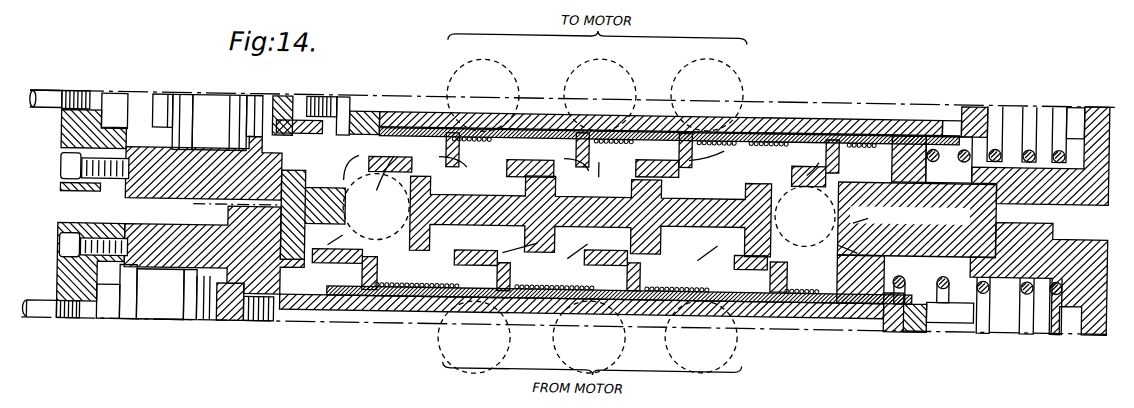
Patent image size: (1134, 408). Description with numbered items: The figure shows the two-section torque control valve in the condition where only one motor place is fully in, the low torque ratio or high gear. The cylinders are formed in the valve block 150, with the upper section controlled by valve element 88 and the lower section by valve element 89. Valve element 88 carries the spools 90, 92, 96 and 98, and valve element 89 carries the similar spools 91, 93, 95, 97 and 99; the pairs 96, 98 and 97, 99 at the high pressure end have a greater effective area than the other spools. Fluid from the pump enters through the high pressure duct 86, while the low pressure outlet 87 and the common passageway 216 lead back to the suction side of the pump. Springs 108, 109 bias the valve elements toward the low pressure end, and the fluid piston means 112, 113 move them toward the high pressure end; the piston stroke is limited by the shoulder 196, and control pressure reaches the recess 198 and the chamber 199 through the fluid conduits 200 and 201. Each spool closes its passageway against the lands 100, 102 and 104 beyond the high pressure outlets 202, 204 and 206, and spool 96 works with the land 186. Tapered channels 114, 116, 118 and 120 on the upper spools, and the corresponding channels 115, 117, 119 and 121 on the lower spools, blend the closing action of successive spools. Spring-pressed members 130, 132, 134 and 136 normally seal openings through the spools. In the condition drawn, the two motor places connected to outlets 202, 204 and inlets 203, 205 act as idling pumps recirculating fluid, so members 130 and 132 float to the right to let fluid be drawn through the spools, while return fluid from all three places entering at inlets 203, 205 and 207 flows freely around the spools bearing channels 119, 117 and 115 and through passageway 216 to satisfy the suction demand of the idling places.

The high pressure duct 86 is at (798, 232).
The low pressure outlet 87 is at (378, 236).
The valve element 88 is at (391, 106).
The valve element 89 is at (392, 307).
The spool 90 is at (406, 124).
The spool 91 is at (345, 288).
The spool 92 is at (536, 125).
The spool 93 is at (470, 266).
The spool 95 is at (612, 270).
The spool 96 is at (813, 128).
The spool 97 is at (770, 292).
The spool 98 is at (908, 130).
The spool 99 is at (870, 250).
The land 100 is at (456, 185).
The land 102 is at (504, 189).
The land 104 is at (619, 185).
The spring 108 is at (1016, 219).
The spring 109 is at (943, 266).
The fluid piston means 112 is at (185, 94).
The fluid piston means 113 is at (157, 318).
The tapered channels 114 is at (215, 196).
The tapered channels 115 is at (345, 258).
The tapered channels 116 is at (530, 165).
The tapered channels 117 is at (476, 235).
The tapered channels 118 is at (632, 150).
The tapered channels 119 is at (596, 235).
The tapered channels 120 is at (792, 163).
The tapered channels 121 is at (750, 232).
The spring-pressed member 130 is at (455, 128).
The spring-pressed member 132 is at (584, 163).
The spring-pressed member 134 is at (694, 146).
The spring-pressed member 136 is at (838, 143).
The valve block 150 is at (683, 238).
The land 186 is at (729, 190).
The shoulder 196 is at (286, 124).
The recess 198 is at (113, 97).
The chamber 199 is at (103, 318).
The fluid conduit 200 is at (50, 108).
The fluid conduit 201 is at (40, 298).
The high pressure outlet 202 is at (508, 56).
The suction inlet 203 is at (450, 336).
The high pressure outlet 204 is at (622, 54).
The suction inlet 205 is at (562, 334).
The high pressure outlet 206 is at (732, 52).
The suction inlet 207 is at (733, 330).
The common passageway 216 is at (392, 211).